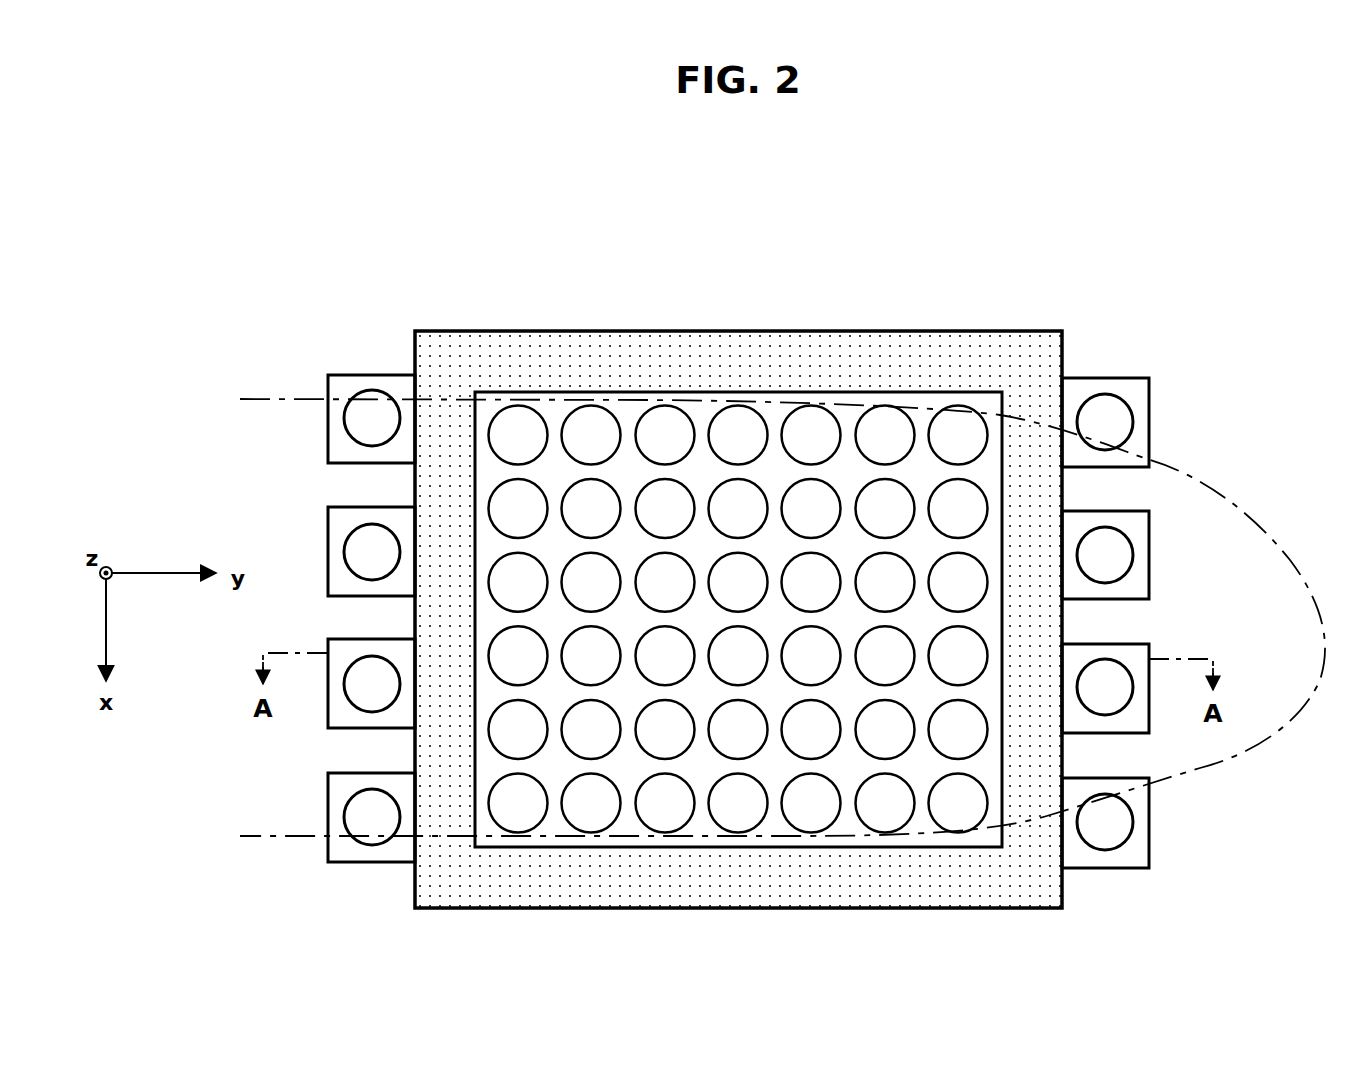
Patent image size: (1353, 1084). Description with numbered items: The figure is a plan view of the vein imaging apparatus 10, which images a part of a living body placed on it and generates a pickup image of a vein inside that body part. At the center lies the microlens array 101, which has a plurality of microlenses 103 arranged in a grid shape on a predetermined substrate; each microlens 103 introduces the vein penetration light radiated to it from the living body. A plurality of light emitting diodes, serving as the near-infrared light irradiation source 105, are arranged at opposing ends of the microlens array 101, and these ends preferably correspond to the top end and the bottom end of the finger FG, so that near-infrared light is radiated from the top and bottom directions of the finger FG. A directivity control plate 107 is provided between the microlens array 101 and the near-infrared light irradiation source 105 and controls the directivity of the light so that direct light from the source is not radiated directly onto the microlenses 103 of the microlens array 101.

The vein imaging apparatus 10 is at (724, 207).
The microlens array 101 is at (790, 366).
The microlens 103 is at (665, 432).
The near-infrared light irradiation source 105 is at (372, 376).
The directivity control plate 107 is at (1010, 331).
The finger FG is at (1217, 483).